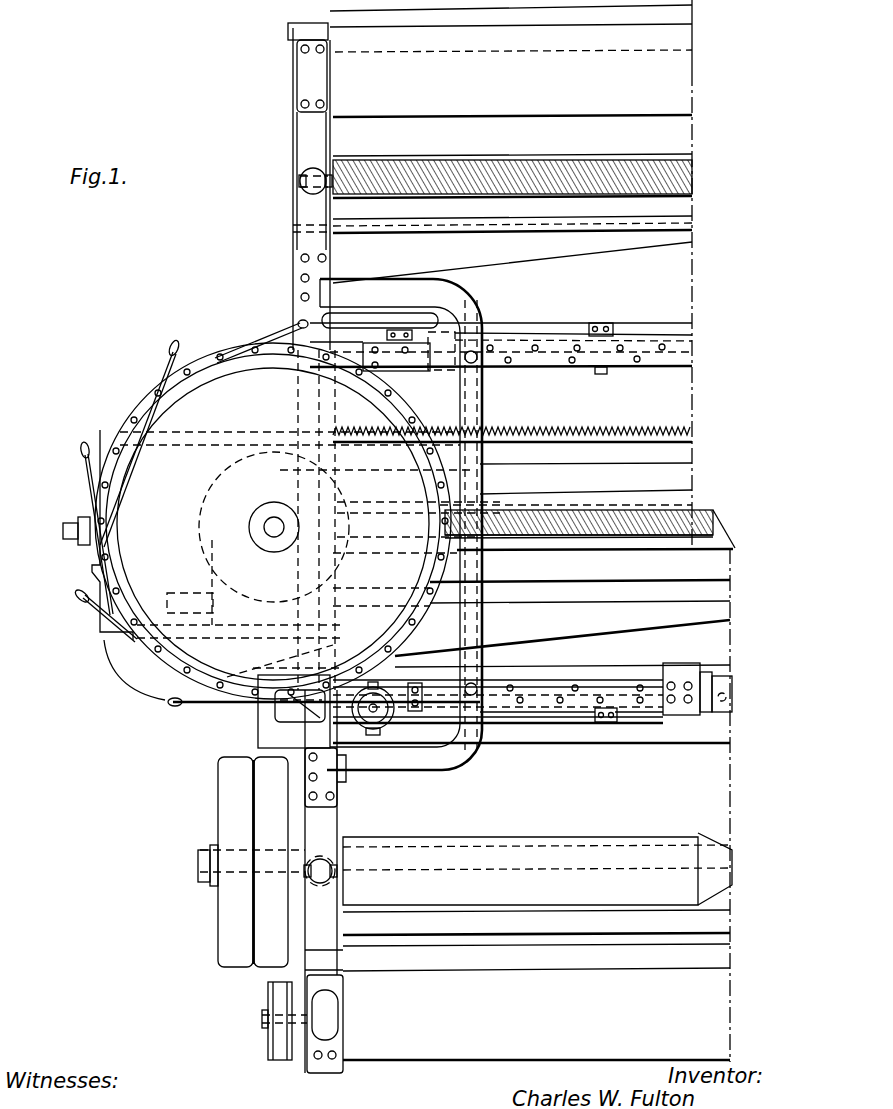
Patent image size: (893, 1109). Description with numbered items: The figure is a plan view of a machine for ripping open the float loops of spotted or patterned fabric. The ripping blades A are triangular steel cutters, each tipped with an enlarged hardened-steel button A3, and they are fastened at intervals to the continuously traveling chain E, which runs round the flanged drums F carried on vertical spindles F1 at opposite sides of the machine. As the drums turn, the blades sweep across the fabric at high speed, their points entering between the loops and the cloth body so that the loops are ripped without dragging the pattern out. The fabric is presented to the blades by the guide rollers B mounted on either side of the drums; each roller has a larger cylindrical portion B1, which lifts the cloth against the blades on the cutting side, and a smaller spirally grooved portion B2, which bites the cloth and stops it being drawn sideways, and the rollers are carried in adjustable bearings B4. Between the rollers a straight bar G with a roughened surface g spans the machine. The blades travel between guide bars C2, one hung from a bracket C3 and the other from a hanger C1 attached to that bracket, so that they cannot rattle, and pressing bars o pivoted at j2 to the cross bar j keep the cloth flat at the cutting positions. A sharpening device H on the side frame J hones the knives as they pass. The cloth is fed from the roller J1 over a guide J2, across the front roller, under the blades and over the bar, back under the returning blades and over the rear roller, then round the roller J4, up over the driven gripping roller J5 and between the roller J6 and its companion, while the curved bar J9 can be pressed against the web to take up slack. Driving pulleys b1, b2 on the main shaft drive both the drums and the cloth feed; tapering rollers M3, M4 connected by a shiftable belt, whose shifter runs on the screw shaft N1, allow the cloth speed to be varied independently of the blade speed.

The ripping blades A is at (290, 345).
The enlarged portion or button A3 is at (78, 597).
The guide or bearing rollers B is at (715, 854).
The cylindrical portion of larger diameter B1 is at (438, 840).
The cylindrical portion of smaller diameter B2 is at (300, 168).
The adjustable bearings B4 is at (300, 185).
The hanger C1 is at (598, 326).
The guide bars C2 is at (640, 330).
The bracket C3 is at (590, 358).
The continuously traveling chain E is at (215, 660).
The flanged drums or disks F is at (190, 418).
The vertical spindles F1 is at (268, 524).
The straight bar G is at (650, 512).
The roughened surface g is at (712, 528).
The sharpening device H is at (268, 715).
The side frame J is at (725, 922).
The feed roller J1 is at (415, 1035).
The guide J2 is at (720, 956).
The roller J4 is at (360, 210).
The driven roller J5 is at (360, 78).
The roller J6 is at (360, 18).
The curved bar J9 is at (330, 247).
The tapering roller M3 is at (172, 708).
The tapering roller M4 is at (652, 272).
The screw shaft N1 is at (650, 430).
The driving pulley b1 is at (272, 905).
The driving pulley b2 is at (240, 900).
The cross bar j is at (485, 402).
The pivot j2 is at (725, 697).
The pressing bars o is at (690, 700).